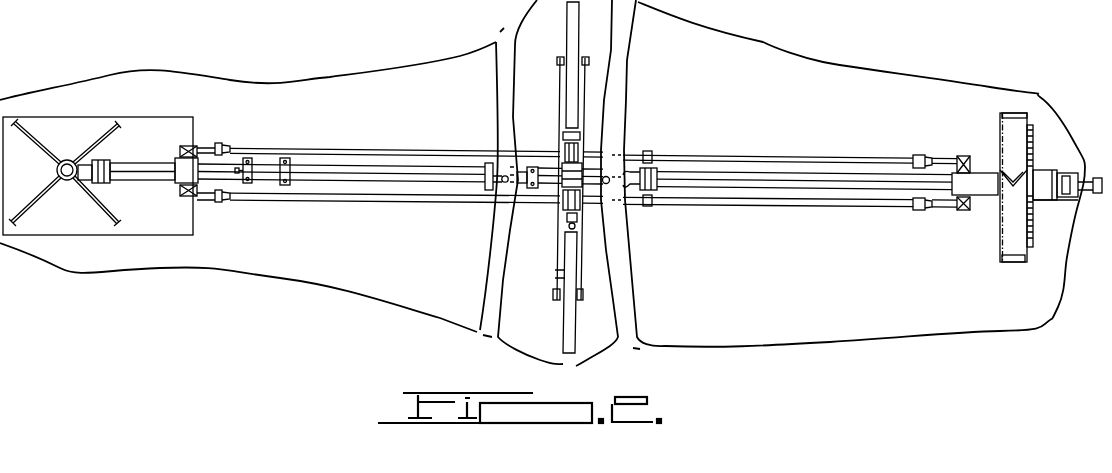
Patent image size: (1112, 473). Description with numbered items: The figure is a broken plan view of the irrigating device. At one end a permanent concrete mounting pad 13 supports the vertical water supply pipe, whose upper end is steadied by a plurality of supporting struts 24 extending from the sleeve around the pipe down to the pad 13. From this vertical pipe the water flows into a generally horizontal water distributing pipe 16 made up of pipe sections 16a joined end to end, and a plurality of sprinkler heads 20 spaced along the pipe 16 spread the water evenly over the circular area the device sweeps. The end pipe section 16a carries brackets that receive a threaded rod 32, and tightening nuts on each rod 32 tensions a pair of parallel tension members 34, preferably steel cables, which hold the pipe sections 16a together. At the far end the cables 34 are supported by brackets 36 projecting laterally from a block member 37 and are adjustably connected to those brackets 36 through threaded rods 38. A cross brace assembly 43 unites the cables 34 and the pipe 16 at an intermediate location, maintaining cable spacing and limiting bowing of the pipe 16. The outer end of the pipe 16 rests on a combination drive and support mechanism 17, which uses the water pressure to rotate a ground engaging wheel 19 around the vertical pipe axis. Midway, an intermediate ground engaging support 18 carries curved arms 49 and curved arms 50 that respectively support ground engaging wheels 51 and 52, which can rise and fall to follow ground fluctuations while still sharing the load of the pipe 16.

The mounting pad 13 is at (60, 123).
The supporting struts 24 is at (40, 147).
The pipe sections 16a is at (138, 165).
The threaded rod 32 is at (200, 148).
The tension members 34 is at (357, 149).
The sprinkler heads 20 is at (280, 158).
The water distributing pipe 16 is at (763, 177).
The ground engaging wheel 51 is at (570, 22).
The ground engaging wheel 52 is at (567, 255).
The curved arms 50 is at (585, 86).
The intermediate ground engaging support 18 is at (592, 116).
The curved arms 49 is at (558, 272).
The cross brace assemblies 43 is at (662, 158).
The threaded rods 38 is at (940, 157).
The brackets 36 is at (987, 142).
The block member 37 is at (988, 190).
The combination drive and support mechanism 17 is at (1046, 111).
The ground engaging wheel 19 is at (1000, 254).